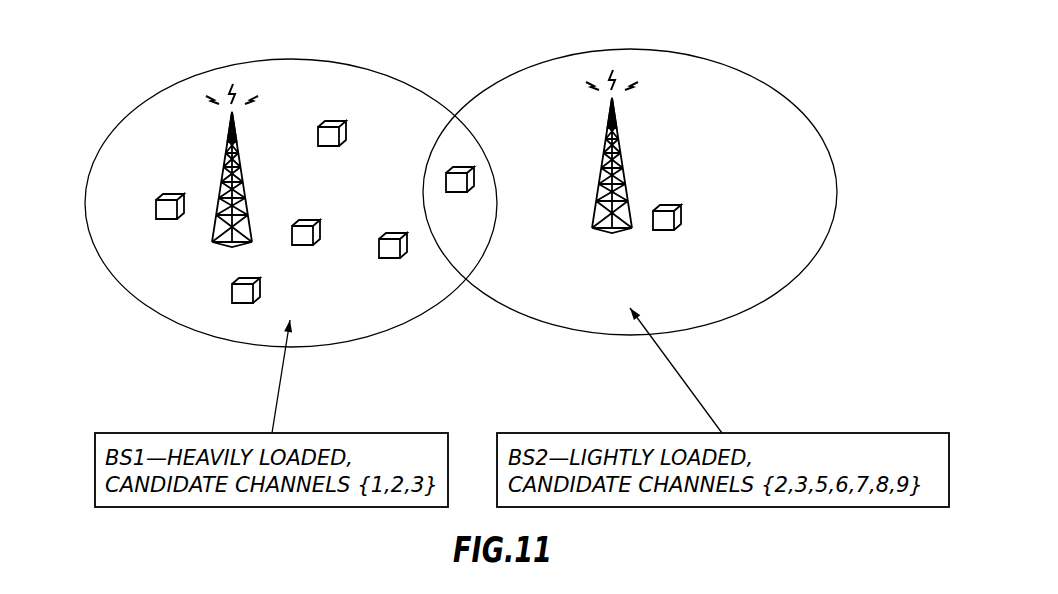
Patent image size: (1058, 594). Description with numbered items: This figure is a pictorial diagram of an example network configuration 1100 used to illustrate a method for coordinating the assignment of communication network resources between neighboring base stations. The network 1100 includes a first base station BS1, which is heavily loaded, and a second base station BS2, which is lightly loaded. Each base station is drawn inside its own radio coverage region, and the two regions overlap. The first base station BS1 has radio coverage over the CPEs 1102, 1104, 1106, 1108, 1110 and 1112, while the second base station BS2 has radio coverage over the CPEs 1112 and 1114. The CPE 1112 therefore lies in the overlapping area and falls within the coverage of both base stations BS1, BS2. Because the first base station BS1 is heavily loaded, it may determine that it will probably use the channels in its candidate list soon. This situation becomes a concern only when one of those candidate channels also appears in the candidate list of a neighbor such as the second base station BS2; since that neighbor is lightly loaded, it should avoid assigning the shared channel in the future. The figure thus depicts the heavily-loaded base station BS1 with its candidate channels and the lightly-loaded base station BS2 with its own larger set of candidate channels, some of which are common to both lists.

The network configuration 1100 is at (790, 60).
The CPE 1102 is at (155, 207).
The CPE 1104 is at (328, 122).
The CPE 1106 is at (303, 246).
The CPE 1108 is at (231, 292).
The CPE 1110 is at (390, 259).
The CPE 1112 is at (463, 168).
The CPE 1114 is at (681, 214).
The first base station BS1 is at (246, 200).
The second base station BS2 is at (622, 152).